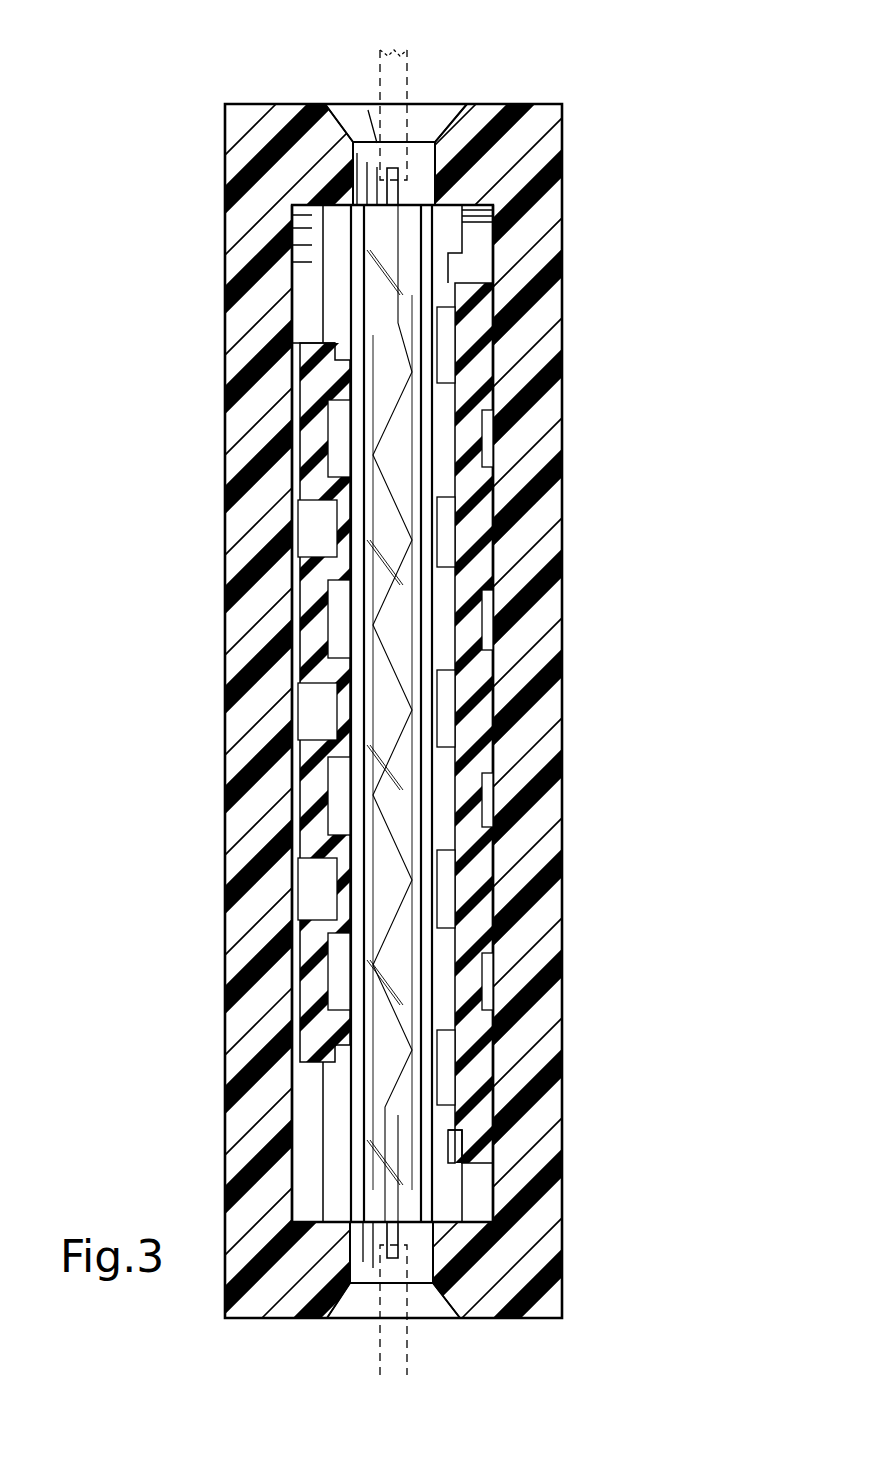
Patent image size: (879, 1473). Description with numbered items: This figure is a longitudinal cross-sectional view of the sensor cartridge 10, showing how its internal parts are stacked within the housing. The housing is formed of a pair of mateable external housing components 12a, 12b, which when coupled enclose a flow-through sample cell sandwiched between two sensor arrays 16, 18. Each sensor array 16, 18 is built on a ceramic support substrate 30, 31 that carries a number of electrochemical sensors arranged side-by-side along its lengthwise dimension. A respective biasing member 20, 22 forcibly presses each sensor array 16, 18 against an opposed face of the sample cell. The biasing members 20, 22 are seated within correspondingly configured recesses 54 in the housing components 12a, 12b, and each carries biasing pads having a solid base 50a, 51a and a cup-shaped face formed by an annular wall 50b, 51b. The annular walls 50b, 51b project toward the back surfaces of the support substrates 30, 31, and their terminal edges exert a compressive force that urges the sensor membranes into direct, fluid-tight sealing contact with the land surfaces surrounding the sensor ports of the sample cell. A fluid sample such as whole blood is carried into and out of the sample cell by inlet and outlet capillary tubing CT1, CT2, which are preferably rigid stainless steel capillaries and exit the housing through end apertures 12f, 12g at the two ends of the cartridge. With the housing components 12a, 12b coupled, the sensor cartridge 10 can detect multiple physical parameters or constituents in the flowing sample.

The sensor cartridge 10 is at (618, 118).
The external housing component 12a is at (240, 923).
The external housing component 12b is at (535, 470).
The end aperture 12f is at (363, 1267).
The end aperture 12g is at (367, 150).
The sensor array 16 is at (322, 1110).
The sensor array 18 is at (437, 225).
The biasing member 20 is at (290, 1072).
The biasing member 22 is at (497, 1180).
The ceramic support substrate 30 is at (300, 670).
The ceramic support substrate 31 is at (450, 430).
The solid base 50a is at (478, 327).
The annular wall 50b is at (458, 367).
The solid base 51a is at (300, 527).
The annular wall 51b is at (332, 438).
The recess 54 is at (302, 313).
The inlet capillary tubing CT1 is at (408, 1354).
The outlet capillary tubing CT2 is at (410, 88).